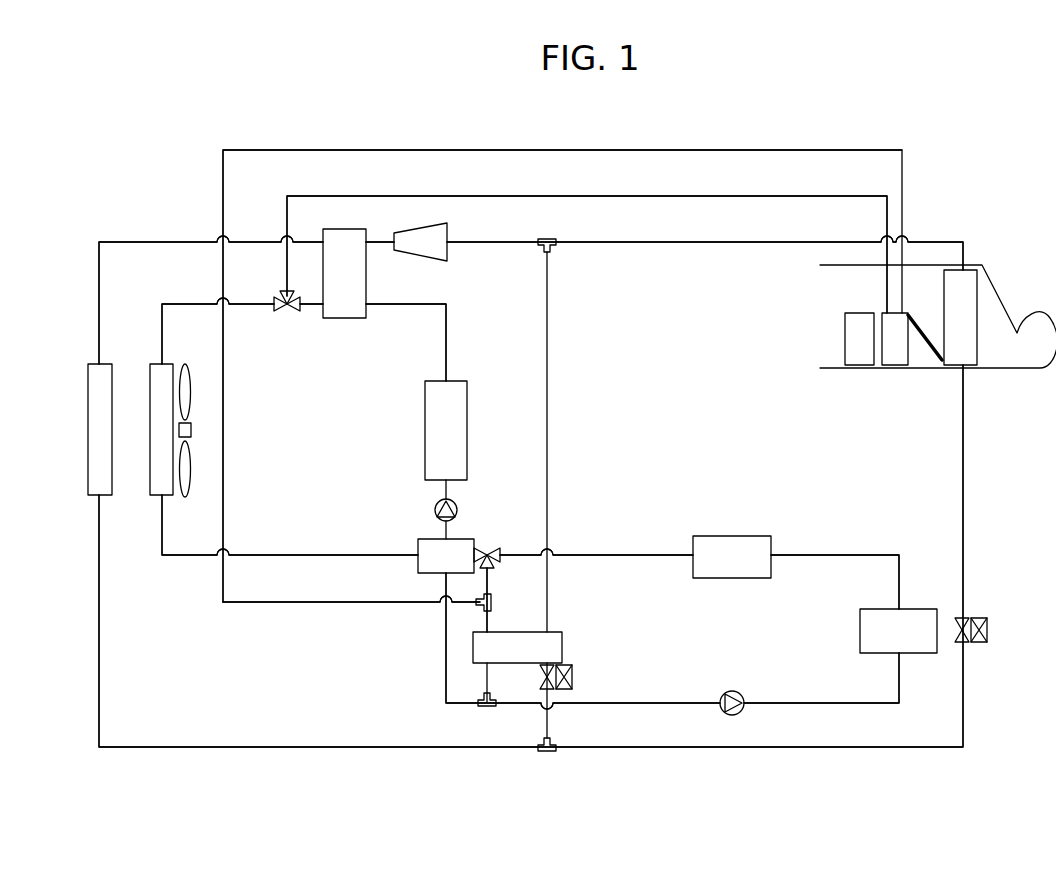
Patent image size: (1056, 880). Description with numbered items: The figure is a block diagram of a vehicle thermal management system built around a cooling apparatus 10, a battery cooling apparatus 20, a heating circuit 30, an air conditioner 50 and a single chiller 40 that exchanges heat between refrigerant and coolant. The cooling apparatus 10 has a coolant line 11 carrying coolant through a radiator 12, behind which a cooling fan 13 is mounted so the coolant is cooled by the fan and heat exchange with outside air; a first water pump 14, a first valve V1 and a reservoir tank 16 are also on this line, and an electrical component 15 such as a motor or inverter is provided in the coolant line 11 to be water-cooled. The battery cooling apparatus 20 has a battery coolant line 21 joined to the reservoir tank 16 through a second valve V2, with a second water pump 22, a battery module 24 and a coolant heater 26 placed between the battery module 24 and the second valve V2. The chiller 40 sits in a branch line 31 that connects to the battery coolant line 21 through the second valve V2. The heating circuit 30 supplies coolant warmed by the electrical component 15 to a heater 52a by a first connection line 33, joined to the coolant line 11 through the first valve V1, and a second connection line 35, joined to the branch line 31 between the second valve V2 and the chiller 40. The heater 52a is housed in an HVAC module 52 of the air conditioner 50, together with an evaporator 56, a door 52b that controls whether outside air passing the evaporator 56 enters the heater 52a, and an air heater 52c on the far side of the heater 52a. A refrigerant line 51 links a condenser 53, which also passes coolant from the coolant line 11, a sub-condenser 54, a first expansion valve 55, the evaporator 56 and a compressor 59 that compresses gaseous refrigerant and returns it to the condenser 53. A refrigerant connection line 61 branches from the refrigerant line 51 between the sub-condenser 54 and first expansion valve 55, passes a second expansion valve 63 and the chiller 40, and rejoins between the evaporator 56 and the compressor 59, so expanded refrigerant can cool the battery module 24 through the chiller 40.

The cooling apparatus 10 is at (178, 562).
The coolant line 11 is at (186, 304).
The radiator 12 is at (150, 430).
The cooling fan 13 is at (190, 490).
The first water pump 14 is at (435, 512).
The electrical component 15 is at (467, 430).
The reservoir tank 16 is at (418, 541).
The first valve V1 is at (282, 311).
The second valve V2 is at (492, 549).
The battery cooling apparatus 20 is at (817, 553).
The battery coolant line 21 is at (446, 645).
The second water pump 22 is at (731, 691).
The battery module 24 is at (860, 630).
The coolant heater 26 is at (731, 536).
The heating circuit 30 is at (695, 147).
The branch line 31 is at (487, 680).
The first connection line 33 is at (586, 196).
The second connection line 35 is at (562, 150).
The chiller 40 is at (562, 645).
The air conditioner 50 is at (964, 519).
The refrigerant line 51 is at (758, 243).
The HVAC module 52 is at (999, 291).
The heater 52a is at (896, 366).
The door 52b is at (932, 366).
The air heater 52c is at (859, 366).
The condenser 53 is at (344, 229).
The sub-condenser 54 is at (88, 430).
The first expansion valve 55 is at (988, 630).
The evaporator 56 is at (983, 366).
The compressor 59 is at (449, 256).
The refrigerant connection line 61 is at (548, 430).
The second expansion valve 63 is at (573, 677).